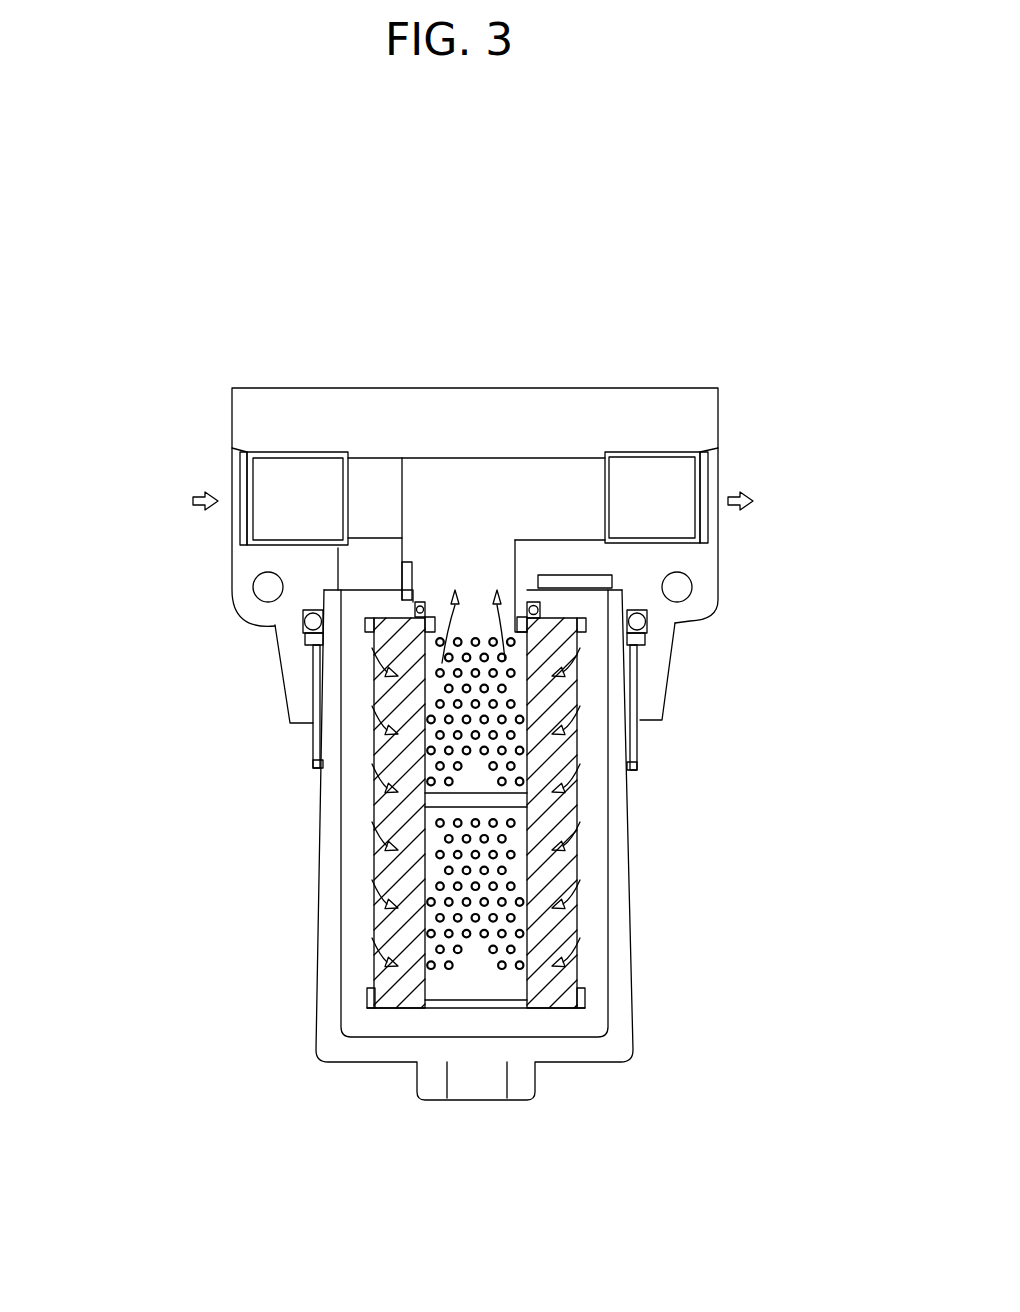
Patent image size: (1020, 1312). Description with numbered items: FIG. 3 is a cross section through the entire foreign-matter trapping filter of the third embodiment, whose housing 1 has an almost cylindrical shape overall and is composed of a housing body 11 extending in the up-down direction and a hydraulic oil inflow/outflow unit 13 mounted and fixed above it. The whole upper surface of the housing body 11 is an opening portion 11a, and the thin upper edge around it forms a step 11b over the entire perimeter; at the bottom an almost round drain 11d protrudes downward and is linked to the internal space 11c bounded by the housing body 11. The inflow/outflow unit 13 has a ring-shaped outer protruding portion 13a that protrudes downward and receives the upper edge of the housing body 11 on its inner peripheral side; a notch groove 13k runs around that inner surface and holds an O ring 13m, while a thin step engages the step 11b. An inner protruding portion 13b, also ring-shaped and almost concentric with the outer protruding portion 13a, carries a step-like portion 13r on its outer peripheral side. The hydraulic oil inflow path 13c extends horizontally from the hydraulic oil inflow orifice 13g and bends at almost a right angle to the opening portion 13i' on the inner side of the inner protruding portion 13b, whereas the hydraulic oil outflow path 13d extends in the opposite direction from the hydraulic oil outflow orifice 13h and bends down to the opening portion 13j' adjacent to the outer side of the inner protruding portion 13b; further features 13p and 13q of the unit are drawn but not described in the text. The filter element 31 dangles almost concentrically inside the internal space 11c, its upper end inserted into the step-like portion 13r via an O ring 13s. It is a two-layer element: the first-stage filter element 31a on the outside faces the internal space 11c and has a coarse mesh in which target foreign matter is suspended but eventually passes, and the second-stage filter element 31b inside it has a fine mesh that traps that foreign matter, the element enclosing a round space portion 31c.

The housing 1 is at (665, 775).
The housing body 11 is at (640, 860).
The opening portion 11a is at (567, 603).
The step 11b is at (281, 663).
The internal space 11c is at (595, 953).
The drain 11d is at (482, 1080).
The hydraulic oil inflow/outflow unit 13 is at (350, 388).
The outer protruding portion 13a is at (297, 697).
The inner protruding portion 13b is at (530, 620).
The hydraulic oil inflow path 13c is at (290, 520).
The hydraulic oil outflow path 13d is at (585, 475).
The hydraulic oil inflow orifice 13g is at (237, 478).
The hydraulic oil outflow orifice 13h is at (708, 472).
The opening portion 13i' is at (503, 461).
The opening portion 13j' is at (249, 570).
The notch groove 13k is at (310, 645).
The O ring 13m is at (314, 622).
The right hole 13p is at (677, 587).
The left hole 13q is at (268, 587).
The step-like portion 13r is at (533, 600).
The O ring 13s is at (419, 600).
The filter element 31 is at (430, 1008).
The first-stage filter element 31a is at (377, 947).
The second-stage filter element 31b is at (515, 1000).
The round space portion 31c is at (493, 997).